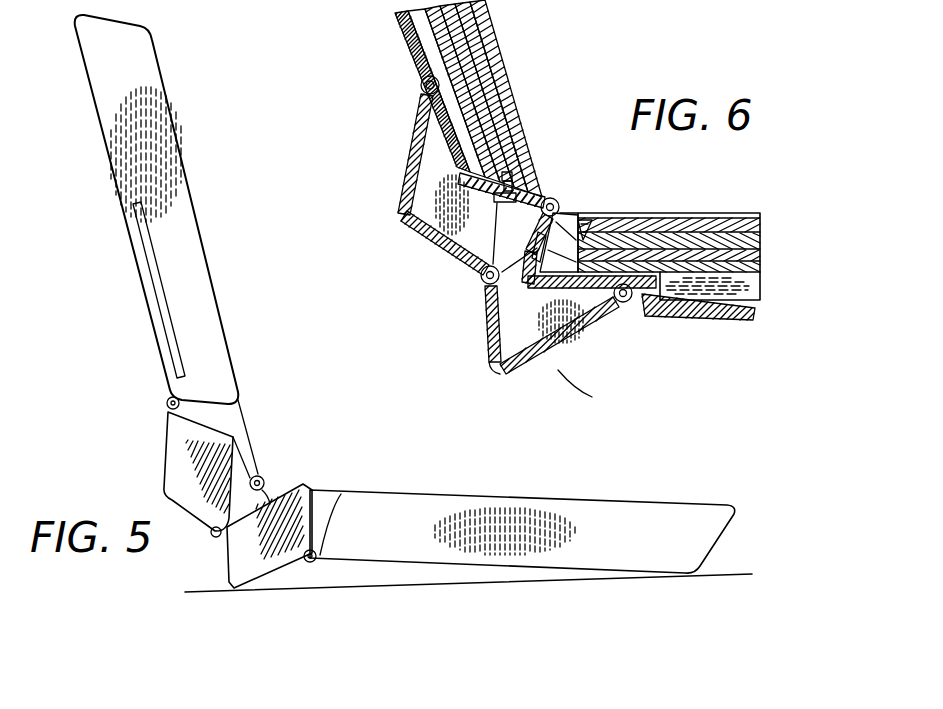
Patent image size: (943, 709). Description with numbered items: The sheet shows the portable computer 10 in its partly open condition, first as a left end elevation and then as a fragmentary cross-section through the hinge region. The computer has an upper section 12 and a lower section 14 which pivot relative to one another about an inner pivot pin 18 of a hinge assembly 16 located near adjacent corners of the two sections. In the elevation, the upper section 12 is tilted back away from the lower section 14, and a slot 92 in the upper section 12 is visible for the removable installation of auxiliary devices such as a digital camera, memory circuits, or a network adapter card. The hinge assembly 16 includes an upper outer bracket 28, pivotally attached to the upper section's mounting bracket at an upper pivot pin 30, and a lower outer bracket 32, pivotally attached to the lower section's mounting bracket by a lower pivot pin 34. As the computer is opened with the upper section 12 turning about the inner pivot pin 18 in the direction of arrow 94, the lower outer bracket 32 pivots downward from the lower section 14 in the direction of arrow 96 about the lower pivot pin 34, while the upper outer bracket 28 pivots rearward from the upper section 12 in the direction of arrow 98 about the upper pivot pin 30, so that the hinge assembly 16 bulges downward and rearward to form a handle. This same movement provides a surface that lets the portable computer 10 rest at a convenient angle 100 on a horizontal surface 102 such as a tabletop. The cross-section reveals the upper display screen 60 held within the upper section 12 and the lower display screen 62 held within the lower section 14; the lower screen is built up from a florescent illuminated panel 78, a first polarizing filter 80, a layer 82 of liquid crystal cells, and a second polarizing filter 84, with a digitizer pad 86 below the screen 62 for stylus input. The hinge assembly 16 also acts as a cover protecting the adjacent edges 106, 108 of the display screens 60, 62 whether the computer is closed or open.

In FIG. 5, the portable computer 10 is at (258, 393).
In FIG. 6, the portable computer 10 is at (583, 86).
In FIG. 5, the upper section 12 is at (186, 160).
In FIG. 6, the upper section 12 is at (398, 42).
In FIG. 5, the lower section 14 is at (621, 499).
In FIG. 6, the lower section 14 is at (738, 320).
In FIG. 5, the hinge assembly 16 is at (222, 557).
In FIG. 6, the hinge assembly 16 is at (483, 322).
In FIG. 5, the inner pivot pin 18 is at (266, 477).
In FIG. 6, the inner pivot pin 18 is at (556, 200).
In FIG. 6, the upper outer bracket 28 is at (452, 252).
In FIG. 5, the upper pivot pin 30 is at (167, 410).
In FIG. 6, the upper pivot pin 30 is at (418, 83).
In FIG. 6, the lower outer bracket 32 is at (535, 366).
In FIG. 5, the lower pivot pin 34 is at (305, 565).
In FIG. 6, the lower pivot pin 34 is at (628, 300).
In FIG. 6, the upper display screen 60 is at (492, 42).
In FIG. 6, the lower display screen 62 is at (697, 215).
In FIG. 6, the florescent illuminated panel 78 is at (760, 274).
In FIG. 6, the first polarizing filter 80 is at (760, 262).
In FIG. 6, the layer of liquid crystal cells 82 is at (760, 247).
In FIG. 6, the second polarizing filter 84 is at (760, 232).
In FIG. 6, the digitizer pad 86 is at (760, 292).
In FIG. 5, the slot 92 is at (150, 327).
In FIG. 6, the arrow 94 is at (589, 128).
In FIG. 6, the arrow 96 is at (605, 397).
In FIG. 6, the arrow 98 is at (390, 183).
In FIG. 5, the angle 100 is at (388, 573).
In FIG. 5, the horizontal surface 102 is at (338, 585).
In FIG. 6, the adjacent edge of the upper display screen 106 is at (543, 187).
In FIG. 6, the adjacent edge of the lower display screen 108 is at (578, 215).